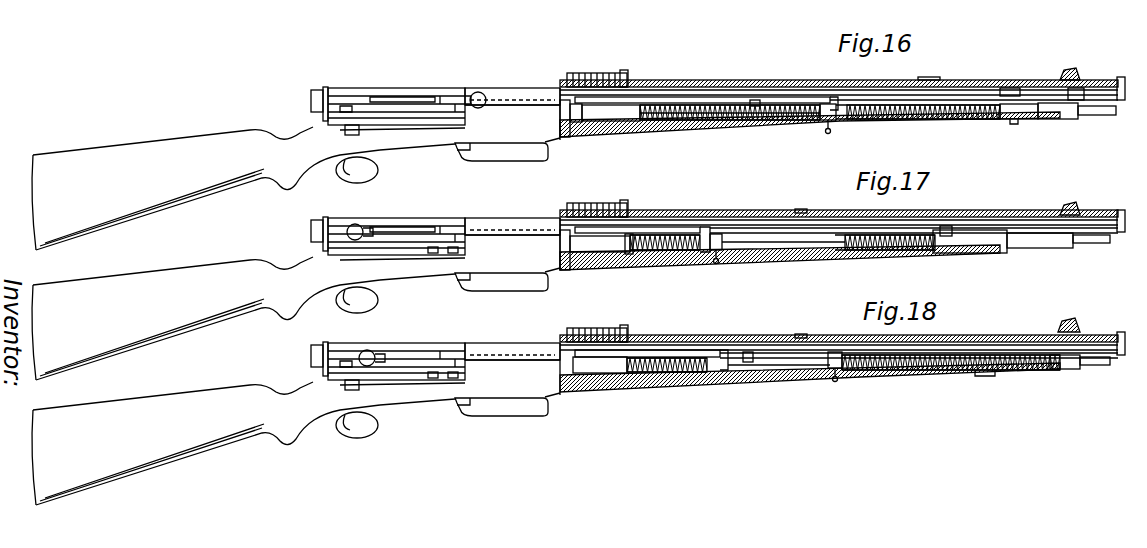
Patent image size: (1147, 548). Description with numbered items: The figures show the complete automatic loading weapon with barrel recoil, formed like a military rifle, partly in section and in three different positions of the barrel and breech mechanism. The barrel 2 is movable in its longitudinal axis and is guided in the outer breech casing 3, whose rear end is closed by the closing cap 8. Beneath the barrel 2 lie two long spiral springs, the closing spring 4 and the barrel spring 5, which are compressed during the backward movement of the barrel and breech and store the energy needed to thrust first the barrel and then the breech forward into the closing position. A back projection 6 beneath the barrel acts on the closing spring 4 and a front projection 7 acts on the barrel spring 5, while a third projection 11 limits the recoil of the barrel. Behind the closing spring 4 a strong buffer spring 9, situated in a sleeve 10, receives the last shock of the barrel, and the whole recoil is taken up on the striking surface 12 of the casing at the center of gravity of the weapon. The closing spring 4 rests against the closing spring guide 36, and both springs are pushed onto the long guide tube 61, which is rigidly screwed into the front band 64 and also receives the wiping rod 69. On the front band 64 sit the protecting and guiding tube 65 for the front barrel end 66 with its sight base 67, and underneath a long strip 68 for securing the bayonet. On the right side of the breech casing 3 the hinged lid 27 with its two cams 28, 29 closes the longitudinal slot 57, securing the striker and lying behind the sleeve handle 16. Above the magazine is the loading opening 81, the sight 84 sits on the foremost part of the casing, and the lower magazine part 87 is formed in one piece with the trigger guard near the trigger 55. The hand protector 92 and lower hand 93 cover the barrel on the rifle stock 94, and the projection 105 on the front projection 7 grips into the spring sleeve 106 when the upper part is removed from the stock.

In FIG. 16, the barrel 2 is at (978, 90).
In FIG. 17, the barrel 2 is at (842, 254).
In FIG. 18, the barrel 2 is at (839, 379).
In FIG. 16, the breech casing 3 is at (426, 92).
In FIG. 18, the breech casing 3 is at (396, 350).
In FIG. 16, the closing spring 4 is at (705, 122).
In FIG. 17, the closing spring 4 is at (665, 265).
In FIG. 18, the closing spring 4 is at (667, 391).
In FIG. 16, the barrel spring 5 is at (893, 125).
In FIG. 17, the barrel spring 5 is at (885, 258).
In FIG. 18, the barrel spring 5 is at (951, 382).
In FIG. 16, the back projection 6 is at (822, 121).
In FIG. 17, the back projection 6 is at (726, 264).
In FIG. 18, the back projection 6 is at (832, 382).
In FIG. 16, the front projection 7 is at (1077, 95).
In FIG. 18, the front projection 7 is at (1089, 380).
In FIG. 16, the closing cap 8 is at (311, 98).
In FIG. 17, the closing cap 8 is at (303, 234).
In FIG. 18, the closing cap 8 is at (305, 359).
In FIG. 16, the buffer spring 9 is at (583, 123).
In FIG. 16, the sleeve 10 is at (613, 121).
In FIG. 17, the sleeve 10 is at (602, 266).
In FIG. 18, the sleeve 10 is at (600, 391).
In FIG. 16, the third projection 11 is at (753, 100).
In FIG. 17, the third projection 11 is at (647, 265).
In FIG. 18, the third projection 11 is at (736, 385).
In FIG. 16, the striking surface 12 is at (570, 138).
In FIG. 17, the striking surface 12 is at (576, 268).
In FIG. 16, the sleeve handle 16 is at (477, 92).
In FIG. 17, the sleeve handle 16 is at (340, 212).
In FIG. 18, the sleeve handle 16 is at (386, 396).
In FIG. 16, the hinged lid 27 is at (345, 122).
In FIG. 18, the hinged lid 27 is at (357, 420).
In FIG. 17, the cam 28 is at (421, 281).
In FIG. 18, the cam 28 is at (421, 412).
In FIG. 17, the cam 29 is at (465, 281).
In FIG. 18, the cam 29 is at (462, 412).
In FIG. 16, the closing spring guide 36 is at (680, 97).
In FIG. 17, the closing spring guide 36 is at (645, 216).
In FIG. 18, the closing spring guide 36 is at (651, 338).
In FIG. 16, the trigger 55 is at (348, 172).
In FIG. 18, the trigger 55 is at (334, 443).
In FIG. 16, the longitudinal slot 57 is at (381, 103).
In FIG. 17, the longitudinal slot 57 is at (418, 206).
In FIG. 16, the guide tube 61 is at (773, 121).
In FIG. 17, the guide tube 61 is at (783, 268).
In FIG. 18, the guide tube 61 is at (779, 408).
In FIG. 16, the front band 64 is at (968, 119).
In FIG. 17, the front band 64 is at (971, 259).
In FIG. 18, the front band 64 is at (979, 394).
In FIG. 16, the protecting and guiding tube 65 is at (1010, 88).
In FIG. 17, the front barrel end 66 is at (1042, 202).
In FIG. 18, the front barrel end 66 is at (1107, 328).
In FIG. 16, the sight base 67 is at (1074, 68).
In FIG. 18, the sight base 67 is at (1060, 316).
In FIG. 17, the strip 68 is at (1040, 258).
In FIG. 16, the wiping rod 69 is at (1108, 116).
In FIG. 17, the wiping rod 69 is at (1096, 258).
In FIG. 16, the loading opening 81 is at (527, 87).
In FIG. 17, the loading opening 81 is at (512, 209).
In FIG. 18, the loading opening 81 is at (512, 338).
In FIG. 16, the sight 84 is at (592, 78).
In FIG. 18, the sight 84 is at (600, 318).
In FIG. 16, the lower magazine part 87 is at (507, 154).
In FIG. 17, the lower magazine part 87 is at (505, 294).
In FIG. 18, the lower magazine part 87 is at (501, 423).
In FIG. 16, the hand protector 92 is at (925, 79).
In FIG. 17, the lower hand 93 is at (795, 197).
In FIG. 18, the lower hand 93 is at (795, 321).
In FIG. 16, the rifle stock 94 is at (410, 140).
In FIG. 18, the rifle stock 94 is at (373, 424).
In FIG. 17, the projection 105 is at (974, 206).
In FIG. 16, the spring sleeve 106 is at (1053, 120).
In FIG. 18, the spring sleeve 106 is at (1048, 385).